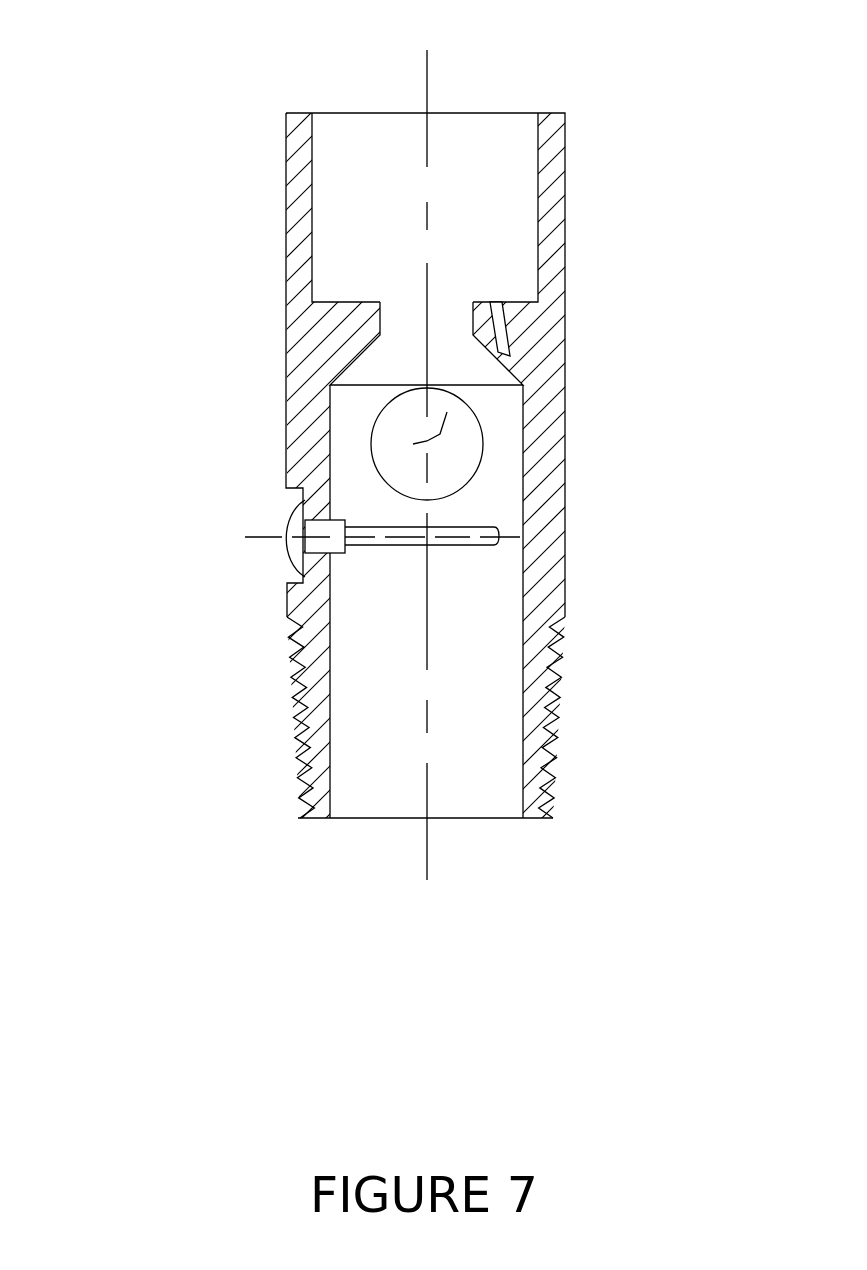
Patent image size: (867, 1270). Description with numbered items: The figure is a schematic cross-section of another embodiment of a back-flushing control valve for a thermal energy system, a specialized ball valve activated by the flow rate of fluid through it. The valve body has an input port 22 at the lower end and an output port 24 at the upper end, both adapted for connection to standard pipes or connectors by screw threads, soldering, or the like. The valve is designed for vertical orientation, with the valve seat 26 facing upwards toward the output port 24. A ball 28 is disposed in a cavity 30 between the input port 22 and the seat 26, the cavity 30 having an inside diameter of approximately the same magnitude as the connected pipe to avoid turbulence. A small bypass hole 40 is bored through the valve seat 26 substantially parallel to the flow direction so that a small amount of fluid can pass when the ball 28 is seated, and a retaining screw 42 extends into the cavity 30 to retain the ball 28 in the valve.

The input port 22 is at (482, 793).
The output port 24 is at (482, 155).
The valve seat 26 is at (380, 386).
The ball 28 is at (455, 447).
The cavity 30 is at (493, 572).
The bypass hole 40 is at (497, 350).
The retaining screw 42 is at (297, 533).